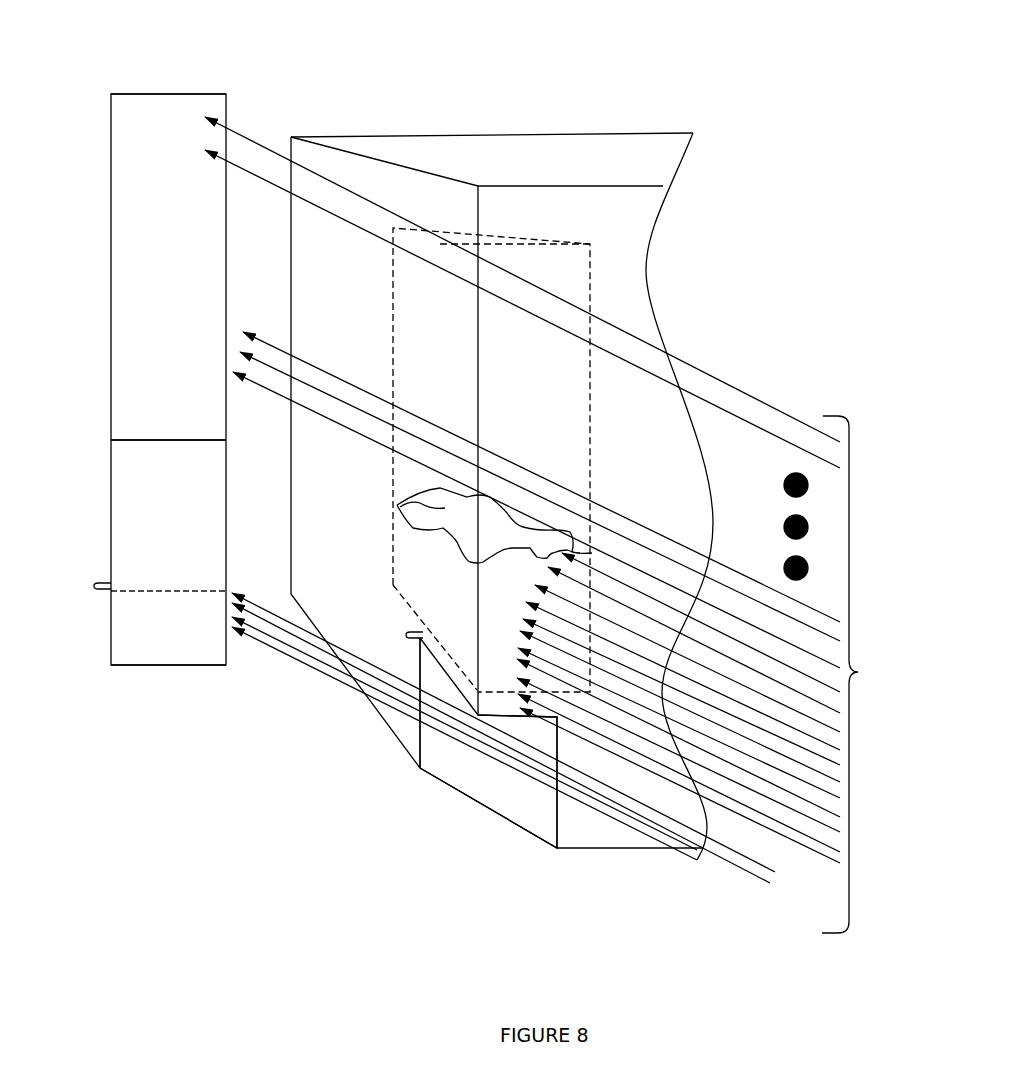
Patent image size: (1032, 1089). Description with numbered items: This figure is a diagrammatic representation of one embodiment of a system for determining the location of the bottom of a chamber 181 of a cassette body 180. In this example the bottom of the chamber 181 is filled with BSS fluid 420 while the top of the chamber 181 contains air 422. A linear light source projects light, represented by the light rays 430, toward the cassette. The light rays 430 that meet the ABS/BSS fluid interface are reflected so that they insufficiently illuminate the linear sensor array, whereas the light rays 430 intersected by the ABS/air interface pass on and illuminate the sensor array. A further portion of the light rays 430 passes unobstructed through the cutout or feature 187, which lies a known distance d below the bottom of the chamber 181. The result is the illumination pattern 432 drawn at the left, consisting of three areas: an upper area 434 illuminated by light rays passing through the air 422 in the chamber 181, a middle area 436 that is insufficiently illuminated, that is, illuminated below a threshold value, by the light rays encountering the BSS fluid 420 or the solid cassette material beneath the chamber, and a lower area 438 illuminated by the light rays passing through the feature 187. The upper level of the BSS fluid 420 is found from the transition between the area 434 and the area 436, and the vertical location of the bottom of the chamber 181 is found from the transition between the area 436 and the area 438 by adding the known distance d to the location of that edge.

The light guide 180 is at (580, 152).
The chamber 181 is at (547, 272).
The feature (cutout) 187 is at (500, 802).
The BSS fluid 420 is at (410, 560).
The air 422 is at (425, 348).
The light rays 430 is at (569, 525).
The illumination pattern 432 is at (179, 90).
The area 434 is at (130, 192).
The area 436 is at (122, 468).
The area 438 is at (125, 612).